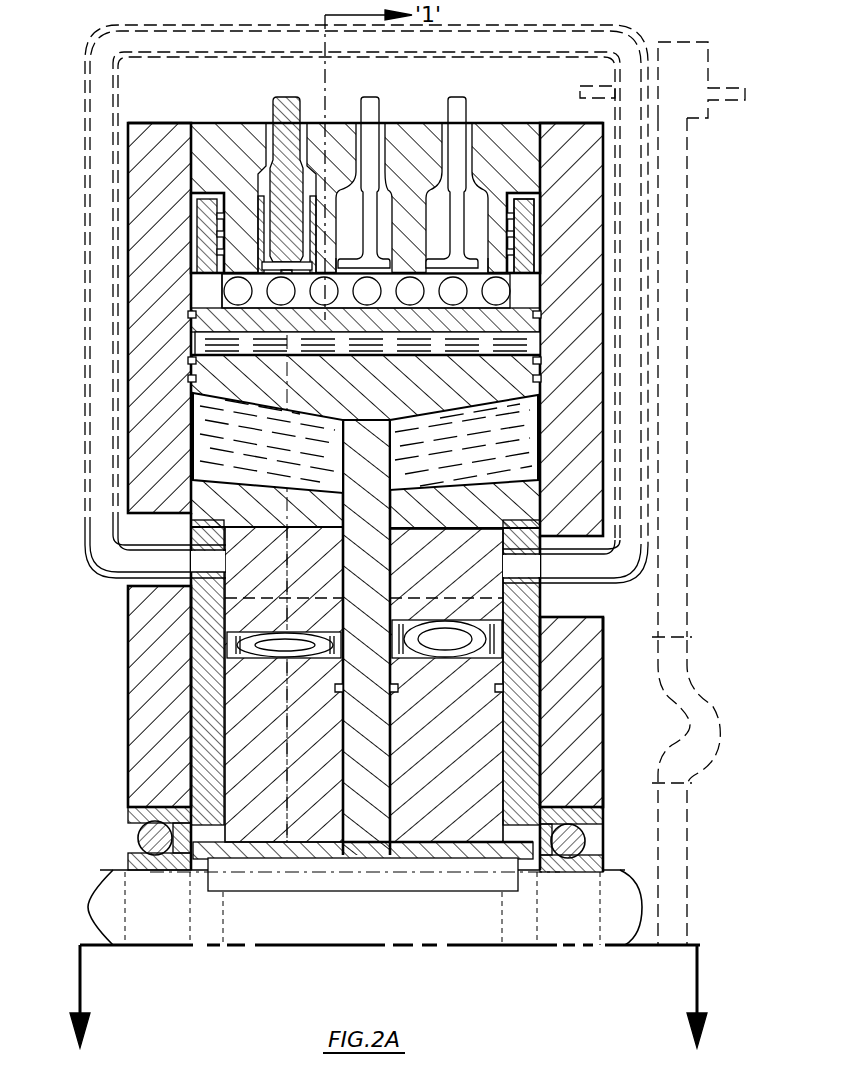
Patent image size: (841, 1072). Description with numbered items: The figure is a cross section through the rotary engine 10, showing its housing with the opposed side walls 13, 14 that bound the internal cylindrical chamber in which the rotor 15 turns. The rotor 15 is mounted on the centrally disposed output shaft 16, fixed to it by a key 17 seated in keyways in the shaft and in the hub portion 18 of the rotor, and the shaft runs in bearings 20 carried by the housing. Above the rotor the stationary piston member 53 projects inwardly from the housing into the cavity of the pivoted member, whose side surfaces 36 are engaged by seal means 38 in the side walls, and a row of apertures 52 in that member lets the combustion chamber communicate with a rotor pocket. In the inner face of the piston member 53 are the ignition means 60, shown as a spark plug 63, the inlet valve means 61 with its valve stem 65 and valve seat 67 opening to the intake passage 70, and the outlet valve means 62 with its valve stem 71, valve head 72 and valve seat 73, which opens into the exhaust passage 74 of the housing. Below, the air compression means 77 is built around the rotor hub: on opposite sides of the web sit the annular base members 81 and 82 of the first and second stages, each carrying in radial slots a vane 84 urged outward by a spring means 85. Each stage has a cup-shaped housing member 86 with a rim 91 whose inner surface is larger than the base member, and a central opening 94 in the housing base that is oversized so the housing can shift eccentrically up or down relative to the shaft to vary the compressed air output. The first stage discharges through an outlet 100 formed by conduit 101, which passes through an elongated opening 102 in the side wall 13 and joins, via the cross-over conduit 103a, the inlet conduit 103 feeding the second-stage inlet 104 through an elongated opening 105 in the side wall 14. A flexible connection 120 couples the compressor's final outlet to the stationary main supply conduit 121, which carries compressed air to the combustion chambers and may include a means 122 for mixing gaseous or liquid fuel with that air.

The rotary engine 10 is at (113, 795).
The side wall 13 is at (145, 726).
The side wall 14 is at (590, 752).
The rotor 15 is at (522, 418).
The output shaft 16 is at (118, 880).
The key 17 is at (508, 881).
The hub portion 18 is at (545, 791).
The bearings 20 is at (135, 822).
The side surfaces 36 is at (205, 237).
The seal means 38 is at (548, 321).
The apertures 52 is at (222, 300).
The stationary piston member 53 is at (237, 200).
The ignition means 60 is at (244, 222).
The inlet valve means 61 is at (405, 273).
The outlet valve means 62 is at (504, 268).
The spark plug 63 is at (274, 114).
The valve stem 65 is at (362, 103).
The valve seat 67 is at (339, 262).
The intake passage 70 is at (383, 190).
The valve stem 71 is at (473, 195).
The valve head 72 is at (548, 336).
The valve seat 73 is at (452, 180).
The exhaust passage 74 is at (495, 255).
The air compression means 77 is at (210, 632).
The base member 81 is at (240, 702).
The base member 82 is at (520, 727).
The vane 84 is at (227, 589).
The spring means 85 is at (240, 646).
The housing member 86 is at (205, 740).
The rim 91 is at (220, 478).
The central opening 94 is at (215, 845).
The outlet 100 is at (118, 578).
The conduit 101 is at (97, 549).
The elongated opening 102 is at (145, 525).
The inlet conduit 103 is at (610, 537).
The cross-over conduit 103a is at (85, 302).
The inlet 104 is at (540, 572).
The elongated opening 105 is at (590, 609).
The flexible connection 120 is at (712, 758).
The main supply conduit 121 is at (690, 460).
The fuel mixing means 122 is at (710, 119).